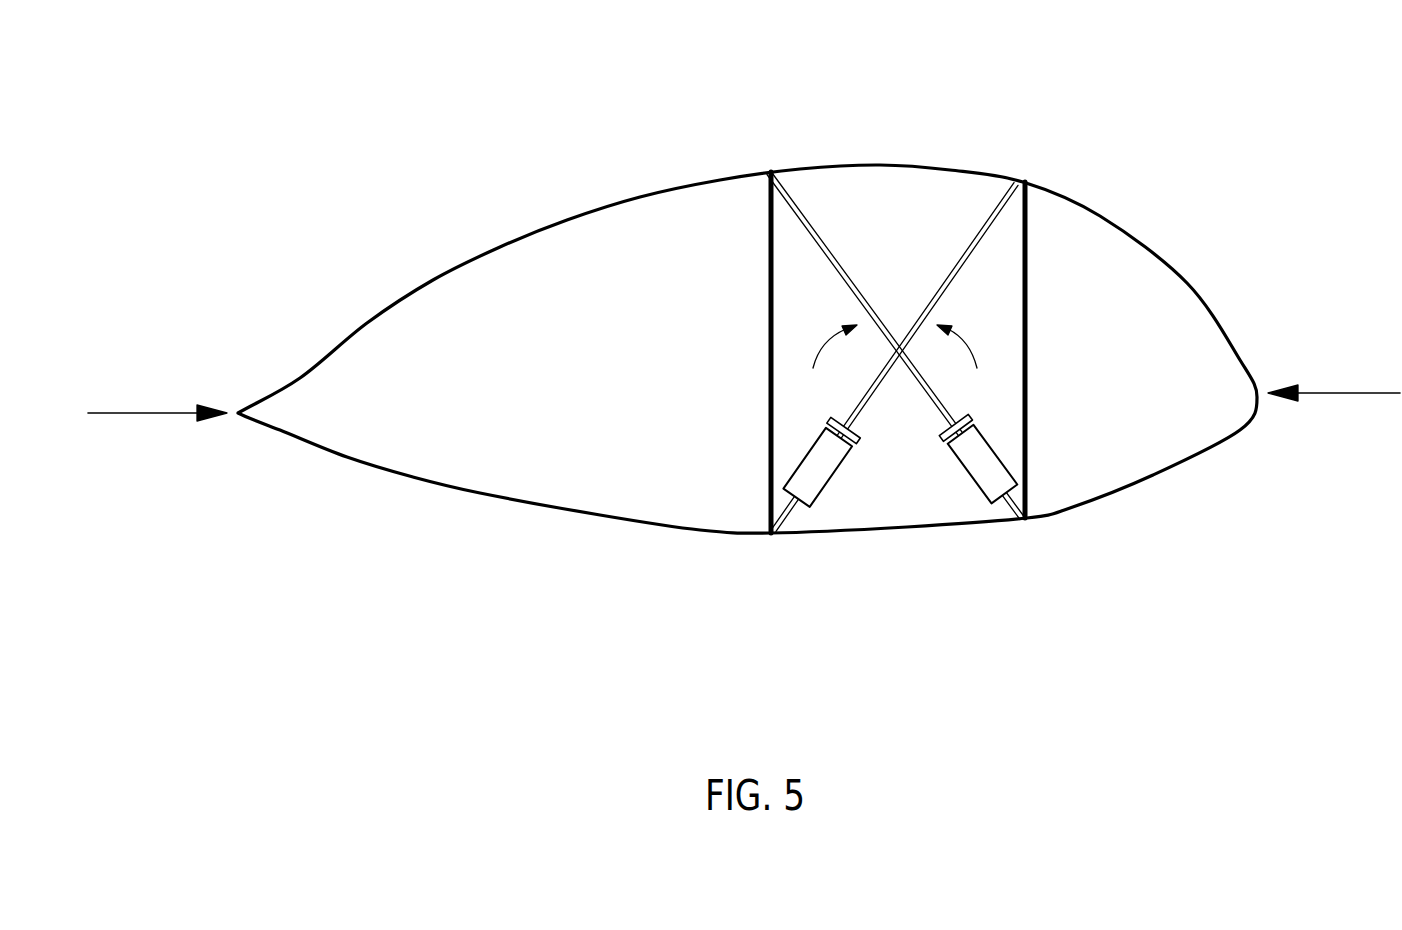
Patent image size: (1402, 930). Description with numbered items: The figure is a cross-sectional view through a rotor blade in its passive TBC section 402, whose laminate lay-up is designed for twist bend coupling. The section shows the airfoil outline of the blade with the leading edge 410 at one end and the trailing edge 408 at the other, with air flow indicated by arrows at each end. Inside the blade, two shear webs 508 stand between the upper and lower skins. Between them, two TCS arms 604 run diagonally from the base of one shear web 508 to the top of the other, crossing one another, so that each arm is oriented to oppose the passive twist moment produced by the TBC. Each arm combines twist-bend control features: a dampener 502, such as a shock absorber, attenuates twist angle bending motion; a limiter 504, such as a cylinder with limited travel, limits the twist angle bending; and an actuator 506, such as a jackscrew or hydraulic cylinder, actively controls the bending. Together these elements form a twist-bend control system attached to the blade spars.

The passive TBC section 402 is at (590, 213).
The trailing edge 408 is at (161, 433).
The leading edge 410 is at (1334, 411).
The dampener 502 is at (807, 217).
The limiter 504 is at (945, 425).
The actuator 506 is at (832, 483).
The shear web 508 is at (1027, 283).
The TCS arm 604 is at (898, 363).